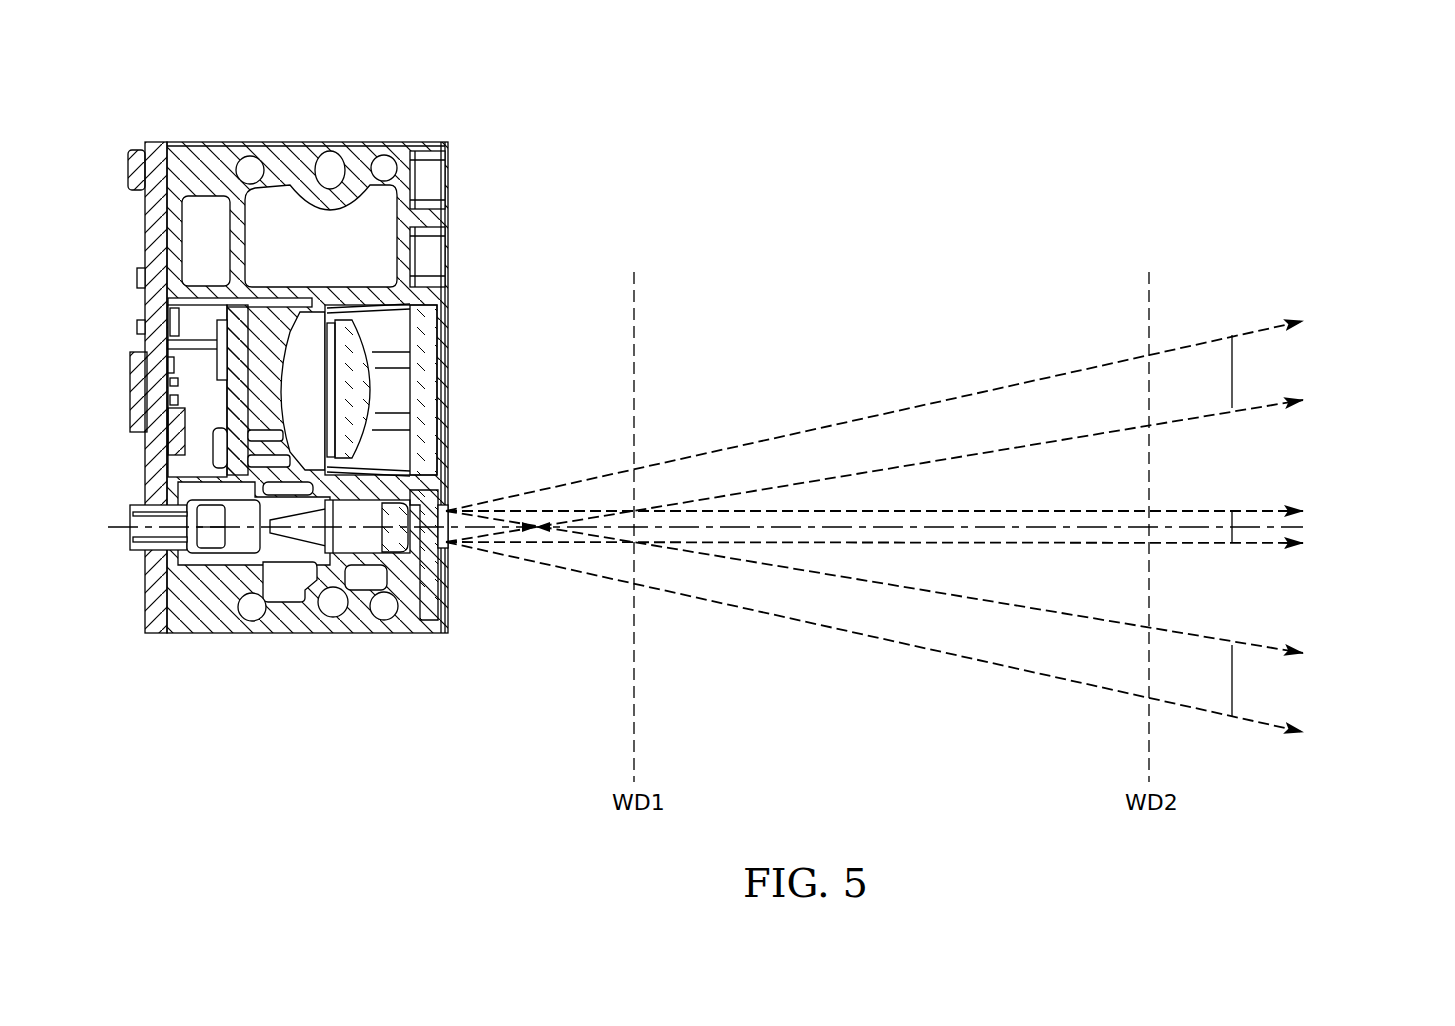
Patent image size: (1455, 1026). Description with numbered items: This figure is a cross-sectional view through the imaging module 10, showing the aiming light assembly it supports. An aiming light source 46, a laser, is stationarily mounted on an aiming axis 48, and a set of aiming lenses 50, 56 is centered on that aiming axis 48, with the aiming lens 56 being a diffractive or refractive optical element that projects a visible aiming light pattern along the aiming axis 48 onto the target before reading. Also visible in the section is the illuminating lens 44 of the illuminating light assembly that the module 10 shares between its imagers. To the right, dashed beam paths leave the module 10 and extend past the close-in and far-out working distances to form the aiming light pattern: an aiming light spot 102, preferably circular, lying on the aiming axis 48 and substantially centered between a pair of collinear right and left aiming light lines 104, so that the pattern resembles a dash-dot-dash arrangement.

The imaging module 10 is at (132, 74).
The illuminating lens 44 is at (368, 384).
The aiming light source 46 is at (208, 538).
The aiming axis 48 is at (1200, 527).
The aiming lens 50 is at (393, 540).
The aiming lens 56 is at (425, 590).
The aiming light spot 102 is at (1240, 511).
The aiming light lines 104 is at (1232, 362).